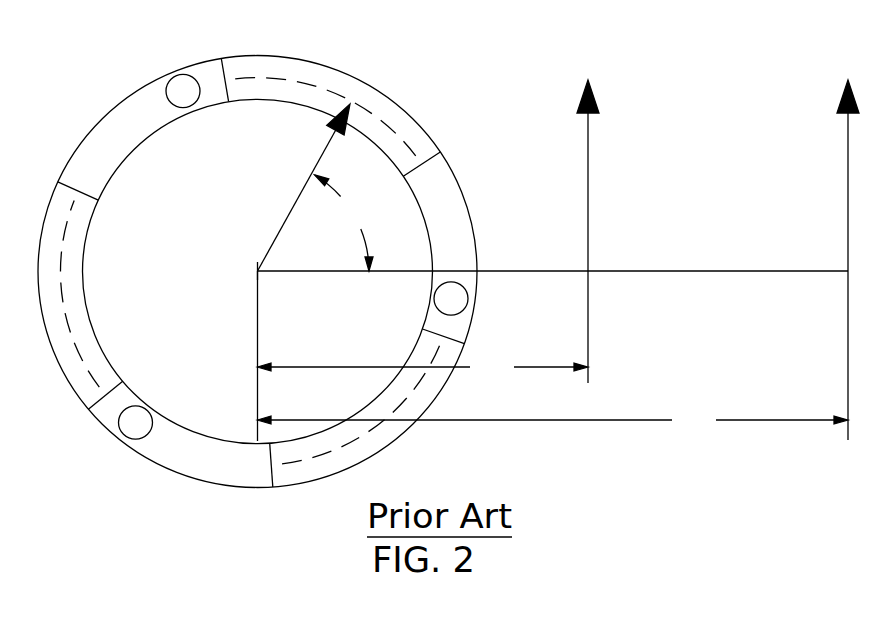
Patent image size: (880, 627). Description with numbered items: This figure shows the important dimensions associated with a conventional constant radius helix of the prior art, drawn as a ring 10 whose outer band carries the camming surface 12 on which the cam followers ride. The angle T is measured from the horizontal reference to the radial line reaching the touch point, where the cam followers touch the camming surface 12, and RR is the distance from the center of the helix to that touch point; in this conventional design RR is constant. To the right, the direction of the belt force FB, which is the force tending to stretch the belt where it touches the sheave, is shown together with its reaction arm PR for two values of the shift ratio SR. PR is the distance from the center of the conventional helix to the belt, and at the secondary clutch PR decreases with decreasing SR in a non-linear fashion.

The bearing ring 10 is at (165, 498).
The camming surface 12 is at (390, 120).
The distance from rotational axis to touch point RR is at (304, 187).
The angle to touch point T is at (344, 223).
The belt force FB is at (712, 175).
The shift ratio SR is at (707, 355).
The distance from rotational axis to belt PR is at (553, 393).